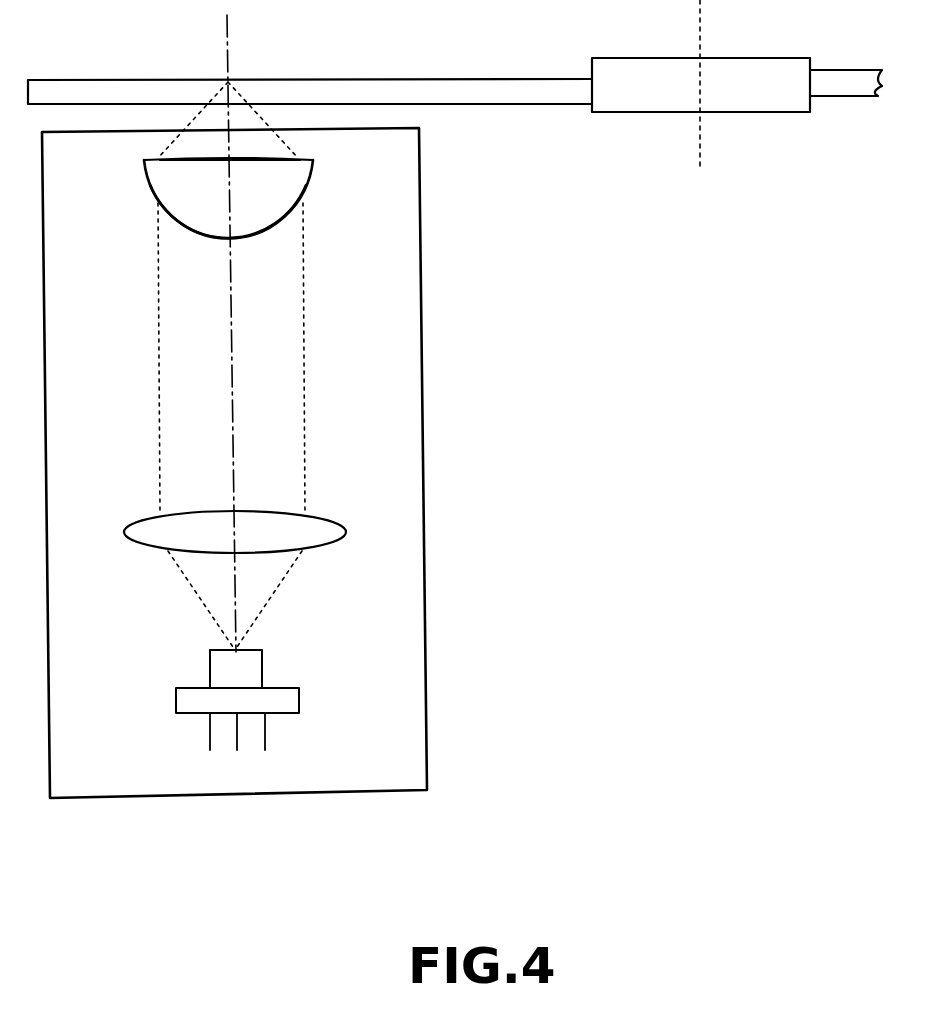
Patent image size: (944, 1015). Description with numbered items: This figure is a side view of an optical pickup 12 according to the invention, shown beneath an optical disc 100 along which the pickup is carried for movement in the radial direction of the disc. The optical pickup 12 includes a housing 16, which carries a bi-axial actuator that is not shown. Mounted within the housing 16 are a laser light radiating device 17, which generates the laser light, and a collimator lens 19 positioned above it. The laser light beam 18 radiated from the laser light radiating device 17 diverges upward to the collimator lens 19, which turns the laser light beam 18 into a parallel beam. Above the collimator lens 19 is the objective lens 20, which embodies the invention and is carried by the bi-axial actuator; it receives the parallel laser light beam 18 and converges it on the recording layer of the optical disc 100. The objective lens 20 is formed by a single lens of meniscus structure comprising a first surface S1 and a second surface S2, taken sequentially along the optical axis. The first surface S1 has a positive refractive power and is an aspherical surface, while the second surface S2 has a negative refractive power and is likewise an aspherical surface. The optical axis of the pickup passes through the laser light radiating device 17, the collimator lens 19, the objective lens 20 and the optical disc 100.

The optical disc 100 is at (88, 88).
The optical pickup 12 is at (568, 358).
The housing 16 is at (336, 797).
The laser light radiating device 17 is at (252, 667).
The laser light beam 18 is at (282, 365).
The collimator lens 19 is at (325, 527).
The objective lens 20 is at (307, 177).
The first surface S1 is at (282, 230).
The second surface S2 is at (180, 160).